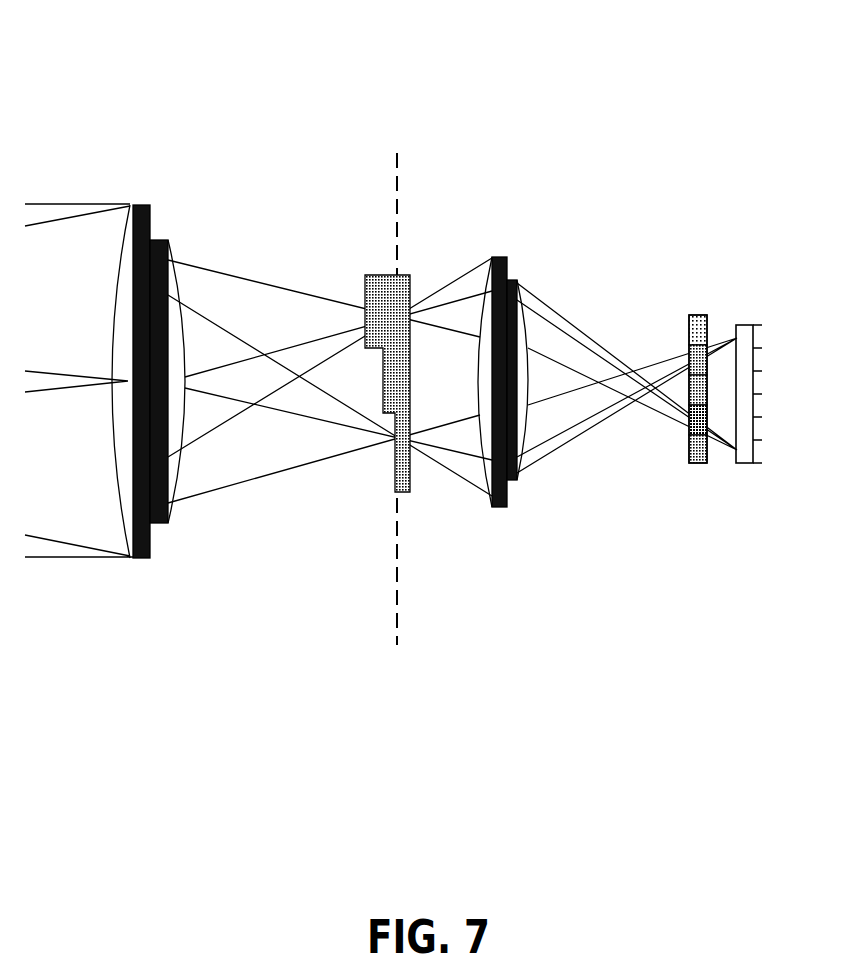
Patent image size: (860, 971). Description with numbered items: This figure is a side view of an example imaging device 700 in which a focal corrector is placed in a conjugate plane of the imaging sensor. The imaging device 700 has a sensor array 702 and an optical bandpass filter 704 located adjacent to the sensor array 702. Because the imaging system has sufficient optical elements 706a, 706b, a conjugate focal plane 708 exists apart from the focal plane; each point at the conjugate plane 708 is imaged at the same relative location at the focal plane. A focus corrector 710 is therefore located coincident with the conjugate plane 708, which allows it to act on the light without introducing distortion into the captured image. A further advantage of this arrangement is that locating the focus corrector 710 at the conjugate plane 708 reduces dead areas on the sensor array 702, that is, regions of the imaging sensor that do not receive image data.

The imaging device 700 is at (148, 72).
The sensor array 702 is at (750, 465).
The optical bandpass filter 704 is at (700, 325).
The optical element 706a is at (150, 557).
The optical element 706b is at (502, 507).
The conjugate focal plane 708 is at (397, 207).
The focus corrector 710 is at (367, 275).